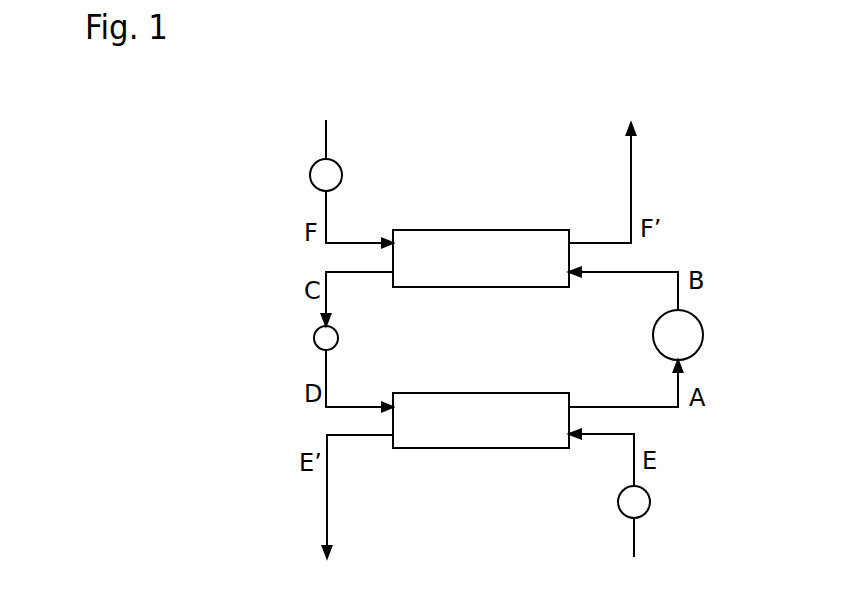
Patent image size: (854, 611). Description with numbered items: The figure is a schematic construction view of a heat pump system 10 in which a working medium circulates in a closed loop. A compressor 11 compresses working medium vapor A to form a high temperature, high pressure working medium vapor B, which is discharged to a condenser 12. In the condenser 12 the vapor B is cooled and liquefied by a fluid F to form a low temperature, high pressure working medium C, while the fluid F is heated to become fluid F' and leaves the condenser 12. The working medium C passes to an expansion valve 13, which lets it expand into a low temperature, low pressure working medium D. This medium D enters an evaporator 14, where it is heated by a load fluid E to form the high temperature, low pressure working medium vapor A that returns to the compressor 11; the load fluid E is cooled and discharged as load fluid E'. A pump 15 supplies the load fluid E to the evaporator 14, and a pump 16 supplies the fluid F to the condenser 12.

The heat pump system 10 is at (456, 160).
The compressor 11 is at (703, 337).
The condenser 12 is at (500, 230).
The expansion valve 13 is at (314, 337).
The evaporator 14 is at (500, 393).
The pump 15 is at (650, 503).
The pump 16 is at (310, 175).